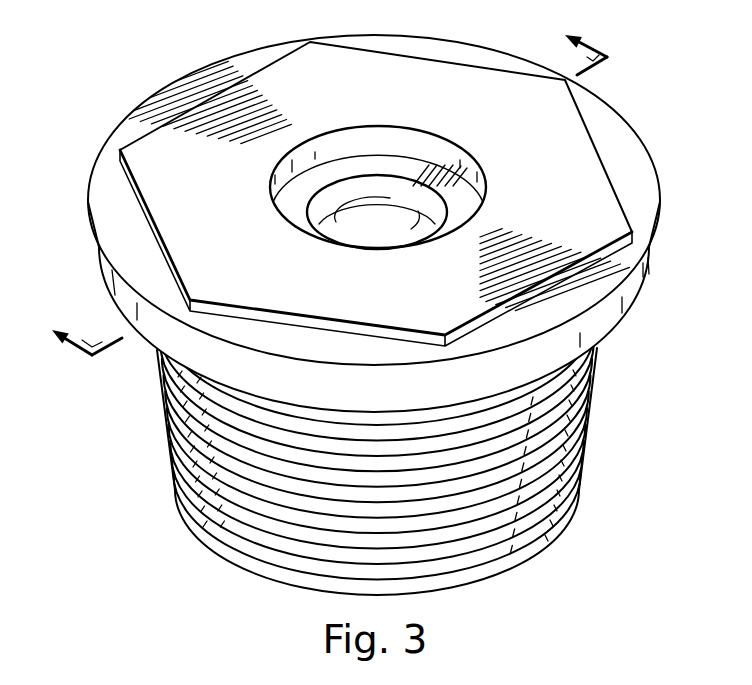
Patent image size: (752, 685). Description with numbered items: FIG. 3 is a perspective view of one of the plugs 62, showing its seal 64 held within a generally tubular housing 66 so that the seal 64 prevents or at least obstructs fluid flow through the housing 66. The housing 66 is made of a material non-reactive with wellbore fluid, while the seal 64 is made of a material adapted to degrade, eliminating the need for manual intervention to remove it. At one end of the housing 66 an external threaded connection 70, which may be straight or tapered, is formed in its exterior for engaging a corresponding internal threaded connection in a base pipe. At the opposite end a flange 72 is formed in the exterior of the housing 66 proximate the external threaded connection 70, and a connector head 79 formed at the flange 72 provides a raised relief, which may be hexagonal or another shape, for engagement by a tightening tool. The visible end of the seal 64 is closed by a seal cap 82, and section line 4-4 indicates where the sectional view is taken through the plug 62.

The plug 62 is at (126, 52).
The seal 64 is at (396, 155).
The housing 66 is at (609, 420).
The external threaded connection 70 is at (175, 442).
The flange 72 is at (95, 241).
The connector head 79 is at (588, 124).
The seal cap 82 is at (345, 165).
The section line 4- 4 is at (319, 182).